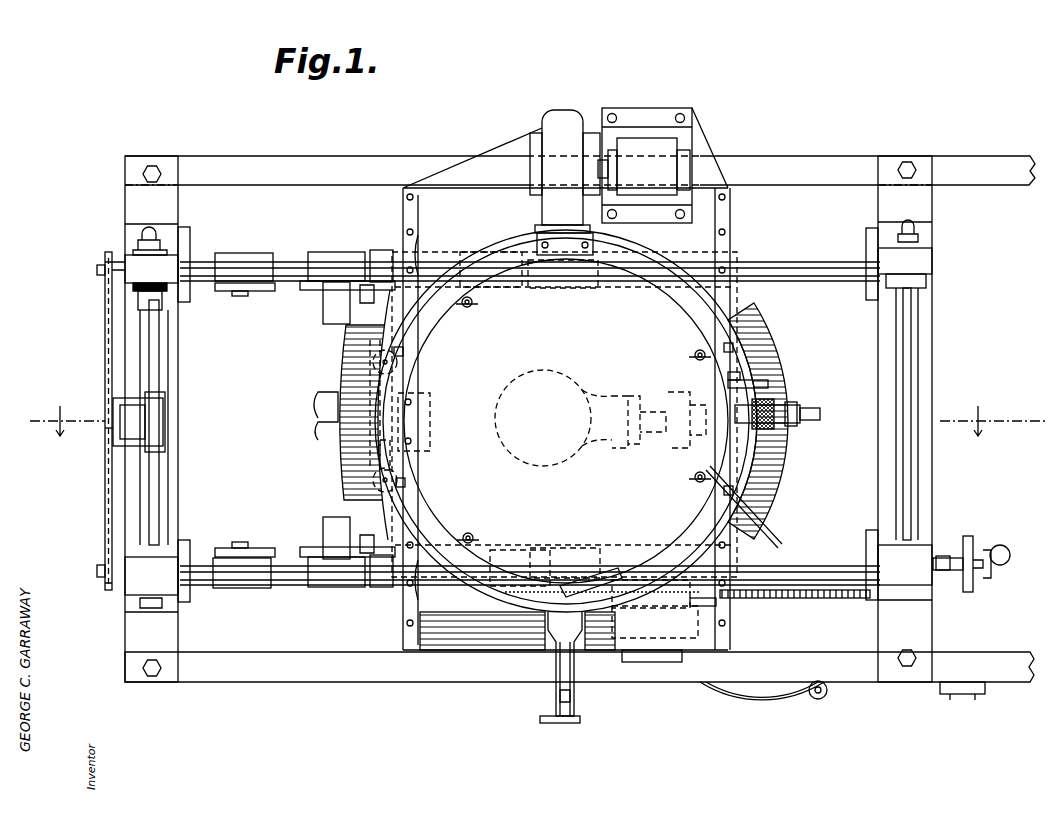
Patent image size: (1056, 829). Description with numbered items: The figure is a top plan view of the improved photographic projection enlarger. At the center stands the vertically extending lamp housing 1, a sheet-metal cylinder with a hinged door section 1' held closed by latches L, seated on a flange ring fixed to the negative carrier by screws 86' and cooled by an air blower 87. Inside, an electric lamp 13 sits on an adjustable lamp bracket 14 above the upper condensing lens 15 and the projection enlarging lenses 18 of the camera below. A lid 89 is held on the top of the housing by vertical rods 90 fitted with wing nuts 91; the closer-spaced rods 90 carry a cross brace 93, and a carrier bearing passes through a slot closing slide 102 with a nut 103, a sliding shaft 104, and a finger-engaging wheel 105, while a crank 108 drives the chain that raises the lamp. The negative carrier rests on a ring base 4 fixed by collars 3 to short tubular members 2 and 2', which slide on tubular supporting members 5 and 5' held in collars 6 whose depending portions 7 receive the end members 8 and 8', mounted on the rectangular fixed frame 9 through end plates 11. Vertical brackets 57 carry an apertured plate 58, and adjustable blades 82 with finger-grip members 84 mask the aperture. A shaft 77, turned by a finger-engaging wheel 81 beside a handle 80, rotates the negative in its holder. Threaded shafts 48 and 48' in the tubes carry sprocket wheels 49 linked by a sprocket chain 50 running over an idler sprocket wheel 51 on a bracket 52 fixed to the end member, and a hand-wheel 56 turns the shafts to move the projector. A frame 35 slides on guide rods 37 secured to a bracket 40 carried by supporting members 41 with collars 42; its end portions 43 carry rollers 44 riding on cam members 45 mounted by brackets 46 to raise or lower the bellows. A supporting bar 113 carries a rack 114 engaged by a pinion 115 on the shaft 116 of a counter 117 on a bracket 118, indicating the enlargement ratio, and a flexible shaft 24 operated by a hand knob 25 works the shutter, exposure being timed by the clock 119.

The lamp housing 1 is at (596, 555).
The door section 1' is at (564, 414).
The short tubular member 2 is at (566, 391).
The short tubular member 2' is at (515, 183).
The collar 3 is at (576, 270).
The ring base 4 is at (529, 420).
The tubular supporting member 5 is at (530, 580).
The tubular supporting member 5' is at (530, 245).
The collar 6 is at (126, 262).
The transversely extending portion 7 is at (170, 286).
The end member 8 is at (165, 422).
The end member 8' is at (925, 414).
The fixed frame 9 is at (806, 158).
The end plate 11 is at (186, 258).
The electric lamp 13 is at (594, 372).
The lamp bracket 14 is at (662, 390).
The upper condensing lens 15 is at (258, 296).
The projection enlarging lenses 18 is at (96, 576).
The flexible shaft 24 is at (780, 698).
The hand knob 25 is at (822, 694).
The frame 35 is at (376, 462).
The guide rod 37 is at (372, 364).
The bracket 40 is at (358, 408).
The supporting member 41 is at (360, 340).
The collar 42 is at (320, 260).
The end portion 43 is at (324, 304).
The roller 44 is at (350, 278).
The cam member 45 is at (268, 548).
The bracket 46 is at (236, 254).
The threaded shaft 48 is at (951, 588).
The threaded shaft 48' is at (71, 276).
The sprocket wheel 49 is at (102, 260).
The sprocket chain 50 is at (104, 338).
The idler sprocket wheel 51 is at (104, 430).
The bracket 52 is at (114, 404).
The hand-wheel 56 is at (984, 576).
The bracket 57 is at (402, 230).
The plate 58 is at (468, 634).
The shaft 77 is at (548, 670).
The handle 80 is at (554, 700).
The finger-engaging wheel 81 is at (560, 724).
The adjustable blade 82 is at (332, 408).
The member 84 is at (318, 428).
The screw 86' is at (604, 430).
The air blower 87 is at (682, 156).
The lid 89 is at (575, 484).
The rod 90 is at (474, 306).
The wing nut 91 is at (468, 308).
The cross brace 93 is at (692, 444).
The slot closing slide 102 is at (776, 442).
The nut 103 is at (770, 432).
The shaft 104 is at (770, 426).
The finger-engaging wheel 105 is at (770, 388).
The crank 108 is at (776, 376).
The supporting bar 113 is at (844, 594).
The rack 114 is at (806, 604).
The pinion 115 is at (680, 592).
The shaft 116 is at (722, 608).
The counter 117 is at (626, 660).
The bracket 118 is at (668, 642).
The clock 119 is at (966, 696).
The latch L is at (602, 554).